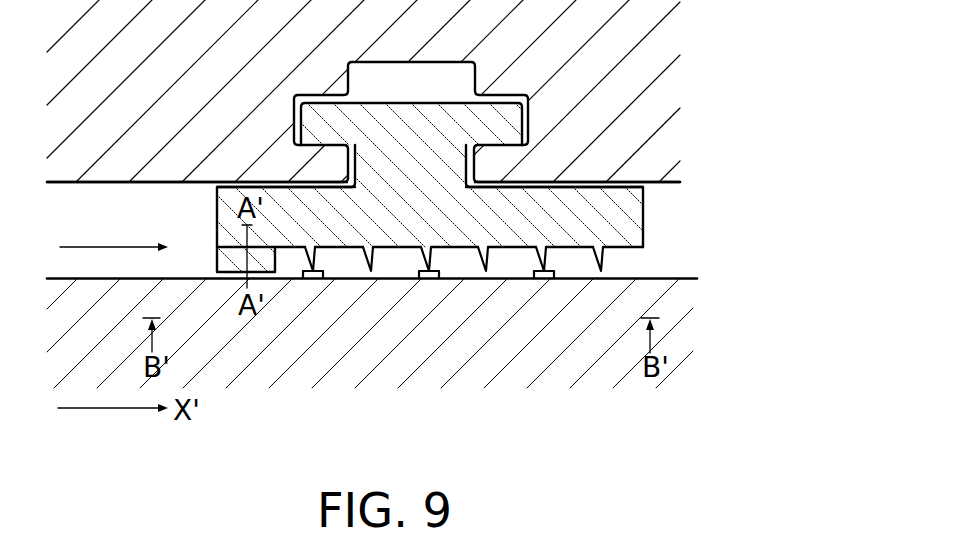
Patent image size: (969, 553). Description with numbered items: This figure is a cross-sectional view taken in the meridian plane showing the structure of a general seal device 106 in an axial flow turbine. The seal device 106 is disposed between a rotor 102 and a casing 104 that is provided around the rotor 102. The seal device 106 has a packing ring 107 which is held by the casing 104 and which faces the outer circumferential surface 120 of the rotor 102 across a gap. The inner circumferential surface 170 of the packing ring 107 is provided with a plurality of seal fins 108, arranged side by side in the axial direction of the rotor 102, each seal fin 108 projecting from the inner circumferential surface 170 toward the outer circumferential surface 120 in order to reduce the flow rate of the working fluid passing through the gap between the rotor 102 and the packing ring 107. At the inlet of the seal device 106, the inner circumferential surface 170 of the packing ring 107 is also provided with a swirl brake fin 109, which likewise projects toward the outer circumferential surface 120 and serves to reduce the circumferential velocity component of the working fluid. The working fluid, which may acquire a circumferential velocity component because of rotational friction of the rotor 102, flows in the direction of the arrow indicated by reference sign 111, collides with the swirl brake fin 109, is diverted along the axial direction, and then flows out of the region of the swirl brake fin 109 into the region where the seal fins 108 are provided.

The rotor 102 is at (677, 333).
The casing 104 is at (613, 152).
The seal device 106 is at (440, 96).
The packing ring 107 is at (623, 203).
The seal fin 108 is at (604, 253).
The swirl brake fin 109 is at (217, 268).
The arrow indicating working fluid flow direction 111 is at (90, 243).
The outer circumferential surface of the rotor 120 is at (658, 278).
The inner circumferential surface of the packing ring 170 is at (630, 250).